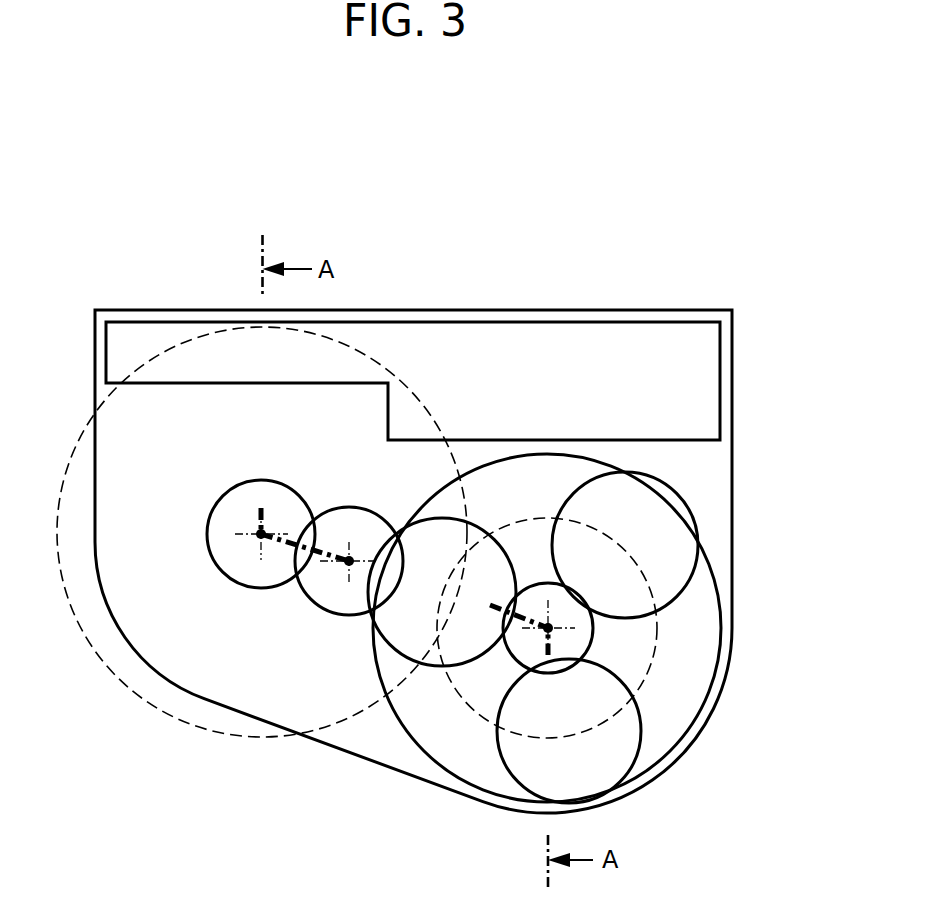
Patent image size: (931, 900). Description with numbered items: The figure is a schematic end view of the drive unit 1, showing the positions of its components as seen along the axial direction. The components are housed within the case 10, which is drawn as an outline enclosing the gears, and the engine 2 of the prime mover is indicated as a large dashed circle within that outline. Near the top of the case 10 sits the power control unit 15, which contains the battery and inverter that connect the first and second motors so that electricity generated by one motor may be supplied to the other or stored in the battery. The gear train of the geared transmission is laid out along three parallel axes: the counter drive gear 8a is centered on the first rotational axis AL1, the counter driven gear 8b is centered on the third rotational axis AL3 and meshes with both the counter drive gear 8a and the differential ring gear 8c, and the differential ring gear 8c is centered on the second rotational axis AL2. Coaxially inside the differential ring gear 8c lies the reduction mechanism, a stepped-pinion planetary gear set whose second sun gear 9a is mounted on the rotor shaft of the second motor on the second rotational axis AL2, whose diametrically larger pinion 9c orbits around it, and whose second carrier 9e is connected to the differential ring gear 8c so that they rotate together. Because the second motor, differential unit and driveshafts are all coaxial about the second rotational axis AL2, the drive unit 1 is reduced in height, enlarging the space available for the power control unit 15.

The drive unit 1 is at (738, 279).
The engine 2 is at (68, 463).
The counter drive gear 8a is at (220, 500).
The counter driven gear 8b is at (358, 505).
The differential ring gear 8c is at (707, 555).
The second sun gear 9a is at (511, 654).
The diametrically larger pinion 9c is at (641, 748).
The second carrier 9e is at (658, 630).
The case 10 is at (733, 450).
The power control unit 15 is at (627, 338).
The first rotational axis AL1 is at (257, 537).
The second rotational axis AL2 is at (548, 628).
The third rotational axis AL3 is at (347, 563).